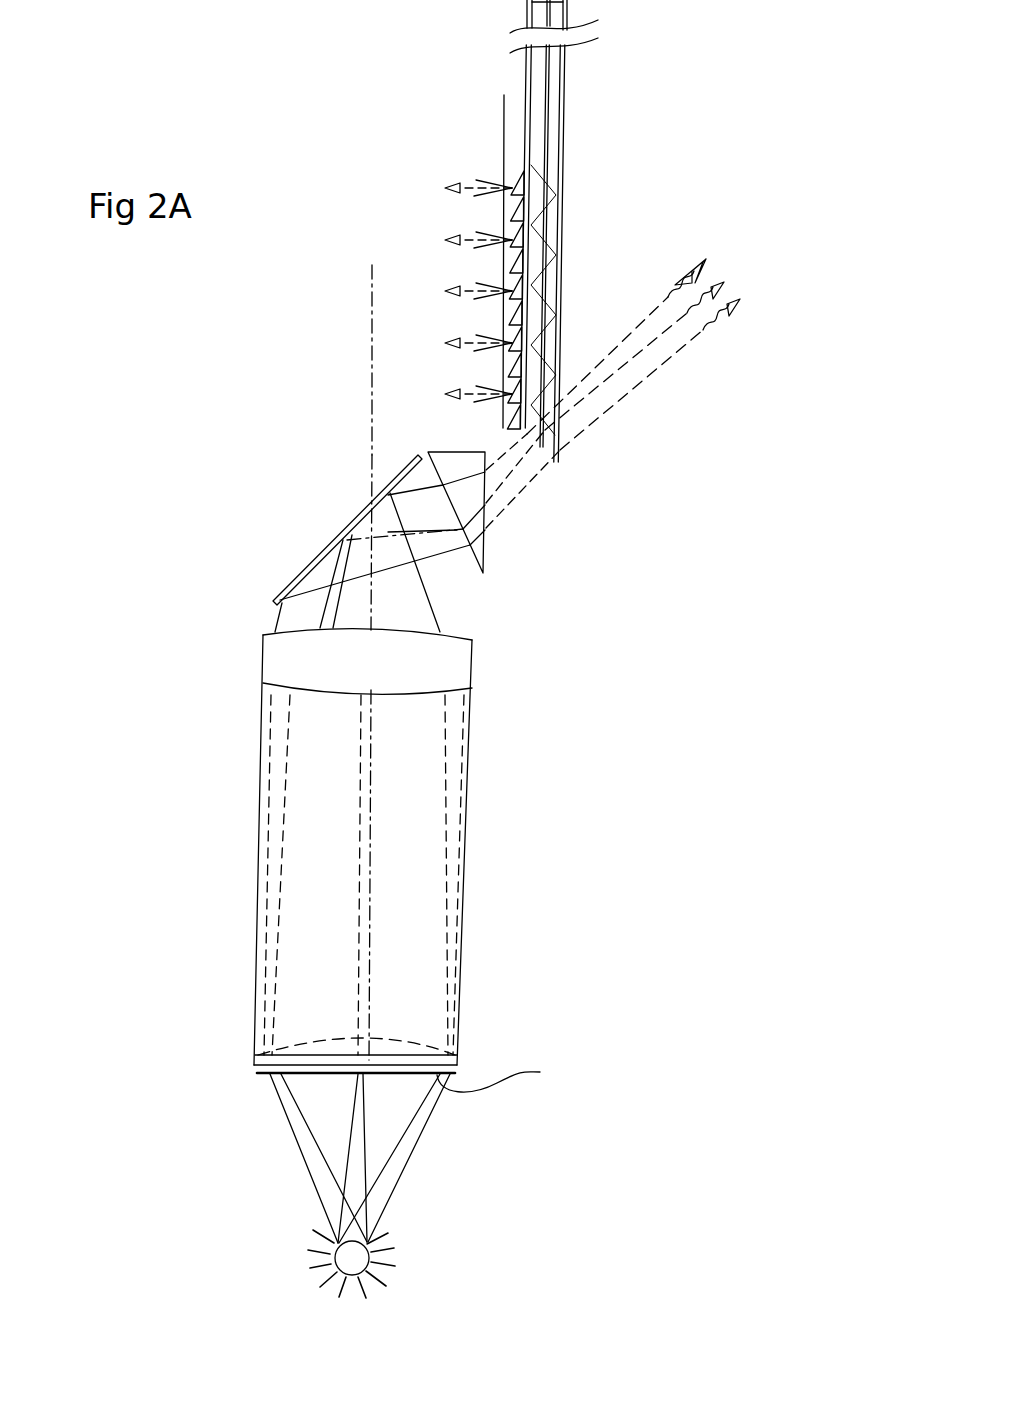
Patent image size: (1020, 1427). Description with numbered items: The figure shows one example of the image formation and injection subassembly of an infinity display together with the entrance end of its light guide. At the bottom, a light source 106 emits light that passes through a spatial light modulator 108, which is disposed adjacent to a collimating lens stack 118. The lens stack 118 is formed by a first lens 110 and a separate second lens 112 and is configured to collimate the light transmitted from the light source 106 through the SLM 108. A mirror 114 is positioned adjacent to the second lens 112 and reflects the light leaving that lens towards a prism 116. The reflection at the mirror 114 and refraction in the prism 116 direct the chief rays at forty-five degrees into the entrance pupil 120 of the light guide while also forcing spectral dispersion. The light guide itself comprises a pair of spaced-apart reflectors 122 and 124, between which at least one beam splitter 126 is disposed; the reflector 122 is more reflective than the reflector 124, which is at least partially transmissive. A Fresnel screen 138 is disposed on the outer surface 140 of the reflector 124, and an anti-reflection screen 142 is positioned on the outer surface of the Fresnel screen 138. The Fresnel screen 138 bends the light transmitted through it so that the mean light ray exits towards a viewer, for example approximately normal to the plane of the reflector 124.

The light source 106 is at (370, 1258).
The spatial light modulator 108 is at (400, 1077).
The first lens 110 is at (390, 1052).
The second lens 112 is at (413, 673).
The mirror 114 is at (312, 567).
The prism 116 is at (478, 548).
The collimating lens stack 118 is at (224, 636).
The entrance pupil 120 is at (533, 452).
The reflector 122 is at (560, 183).
The reflector 124 is at (528, 138).
The beam splitter 126 is at (547, 440).
The Fresnel screen 138 is at (518, 187).
The outer surface 140 is at (525, 83).
The anti-reflection screen 142 is at (503, 371).